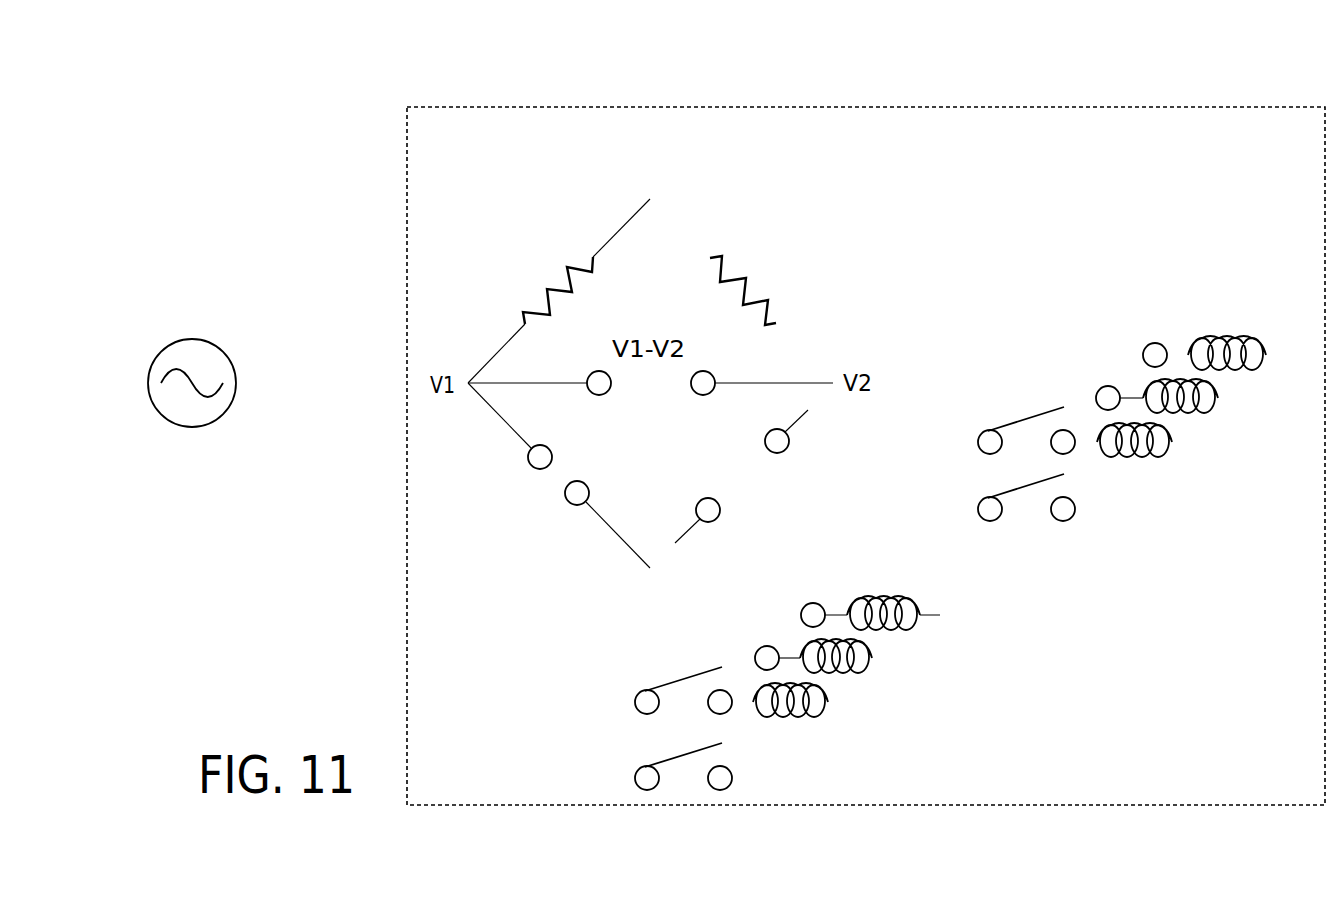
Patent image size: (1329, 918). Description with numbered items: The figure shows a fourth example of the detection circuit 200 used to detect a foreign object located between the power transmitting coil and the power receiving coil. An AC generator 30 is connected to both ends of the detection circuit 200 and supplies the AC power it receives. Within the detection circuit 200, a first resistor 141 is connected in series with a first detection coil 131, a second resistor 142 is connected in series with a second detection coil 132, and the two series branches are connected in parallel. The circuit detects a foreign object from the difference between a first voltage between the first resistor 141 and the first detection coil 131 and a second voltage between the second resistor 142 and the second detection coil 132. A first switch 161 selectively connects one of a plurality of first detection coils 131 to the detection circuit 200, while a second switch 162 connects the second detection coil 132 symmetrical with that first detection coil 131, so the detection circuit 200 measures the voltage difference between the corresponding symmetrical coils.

The detection circuit 200 is at (709, 107).
The AC generator 30 is at (162, 334).
The first resistor 141 is at (539, 271).
The second resistor 142 is at (770, 271).
The first switch 161 is at (697, 654).
The second switch 162 is at (1026, 393).
The first detection coil 131 is at (899, 589).
The second detection coil 132 is at (1246, 329).